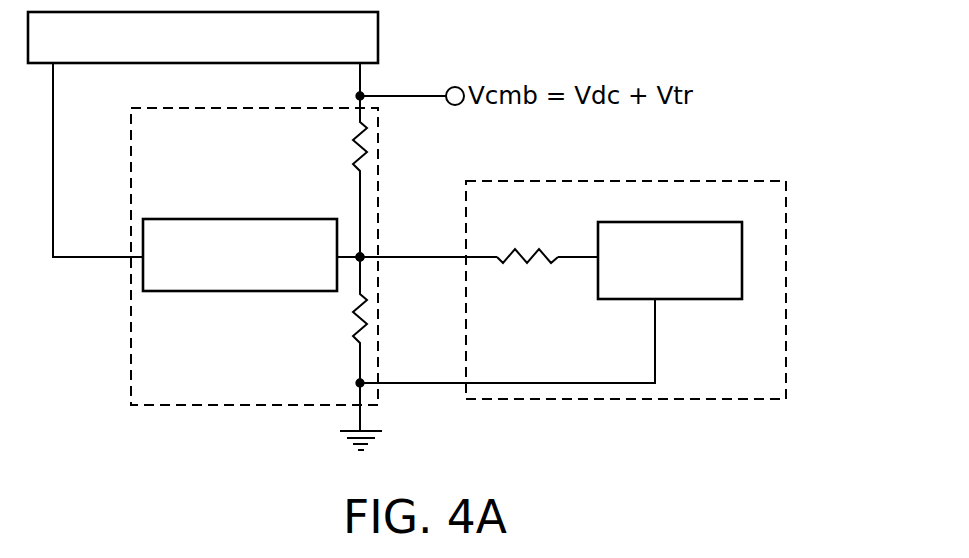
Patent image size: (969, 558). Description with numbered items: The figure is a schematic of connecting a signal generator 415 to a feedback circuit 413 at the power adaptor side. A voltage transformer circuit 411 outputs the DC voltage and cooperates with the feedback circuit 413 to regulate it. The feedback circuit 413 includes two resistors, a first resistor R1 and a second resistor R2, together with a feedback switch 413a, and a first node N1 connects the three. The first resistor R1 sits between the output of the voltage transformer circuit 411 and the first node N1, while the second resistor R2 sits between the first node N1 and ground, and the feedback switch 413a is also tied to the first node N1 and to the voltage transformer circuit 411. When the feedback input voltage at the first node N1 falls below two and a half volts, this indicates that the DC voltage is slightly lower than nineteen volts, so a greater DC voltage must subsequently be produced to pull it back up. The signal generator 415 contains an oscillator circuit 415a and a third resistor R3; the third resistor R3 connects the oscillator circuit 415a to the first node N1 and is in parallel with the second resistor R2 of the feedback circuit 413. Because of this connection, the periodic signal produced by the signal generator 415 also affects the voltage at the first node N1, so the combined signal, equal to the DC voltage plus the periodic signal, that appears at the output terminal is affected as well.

The voltage transformer circuit 411 is at (80, 44).
The feedback circuit 413 is at (177, 388).
The feedback switch 413a is at (182, 272).
The signal generator 415 is at (710, 383).
The oscillator circuit 415a is at (695, 292).
The first resistor R1 is at (345, 146).
The second resistor R2 is at (340, 321).
The third resistor R3 is at (527, 272).
The first node N1 is at (362, 255).